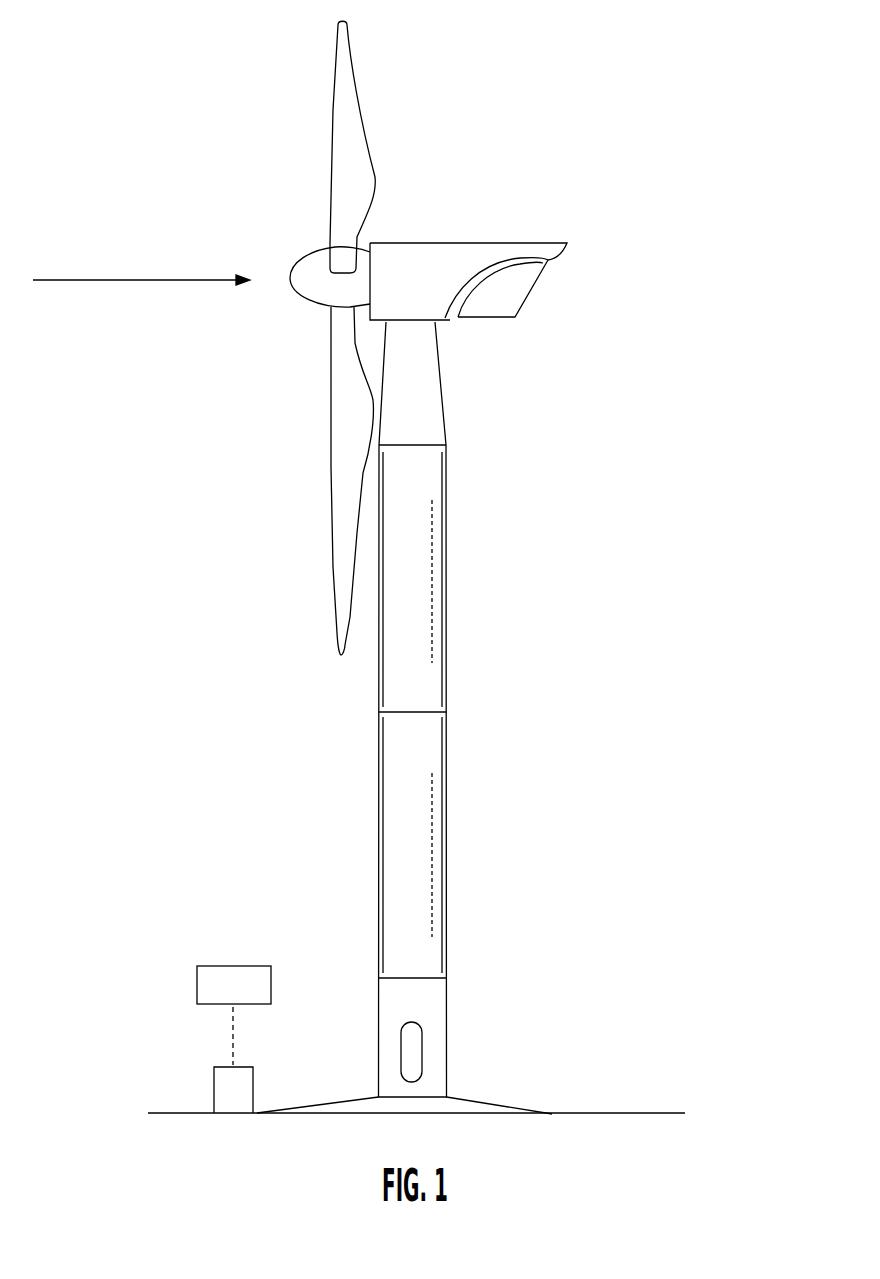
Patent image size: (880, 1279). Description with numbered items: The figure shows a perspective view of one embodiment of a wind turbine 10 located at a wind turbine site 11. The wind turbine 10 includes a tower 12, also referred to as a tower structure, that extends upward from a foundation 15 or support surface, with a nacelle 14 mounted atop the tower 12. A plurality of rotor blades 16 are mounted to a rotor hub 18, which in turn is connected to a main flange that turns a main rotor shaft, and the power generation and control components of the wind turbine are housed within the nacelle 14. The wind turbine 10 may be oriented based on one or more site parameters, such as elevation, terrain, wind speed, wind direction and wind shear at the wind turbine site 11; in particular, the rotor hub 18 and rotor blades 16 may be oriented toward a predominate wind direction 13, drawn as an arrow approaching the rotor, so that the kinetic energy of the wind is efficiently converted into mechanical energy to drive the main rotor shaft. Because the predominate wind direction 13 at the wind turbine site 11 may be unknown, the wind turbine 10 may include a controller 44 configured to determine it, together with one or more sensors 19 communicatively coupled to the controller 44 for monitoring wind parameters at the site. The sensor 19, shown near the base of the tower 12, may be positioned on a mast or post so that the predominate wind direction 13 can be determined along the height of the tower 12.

The wind turbine 10 is at (238, 127).
The wind turbine site 11 is at (542, 960).
The tower 12 is at (389, 816).
The predominate wind direction 13 is at (140, 280).
The nacelle 14 is at (455, 260).
The foundation 15 is at (187, 1113).
The rotor blades 16 is at (347, 126).
The rotor hub 18 is at (302, 277).
The sensor 19 is at (217, 1090).
The controller 44 is at (210, 966).